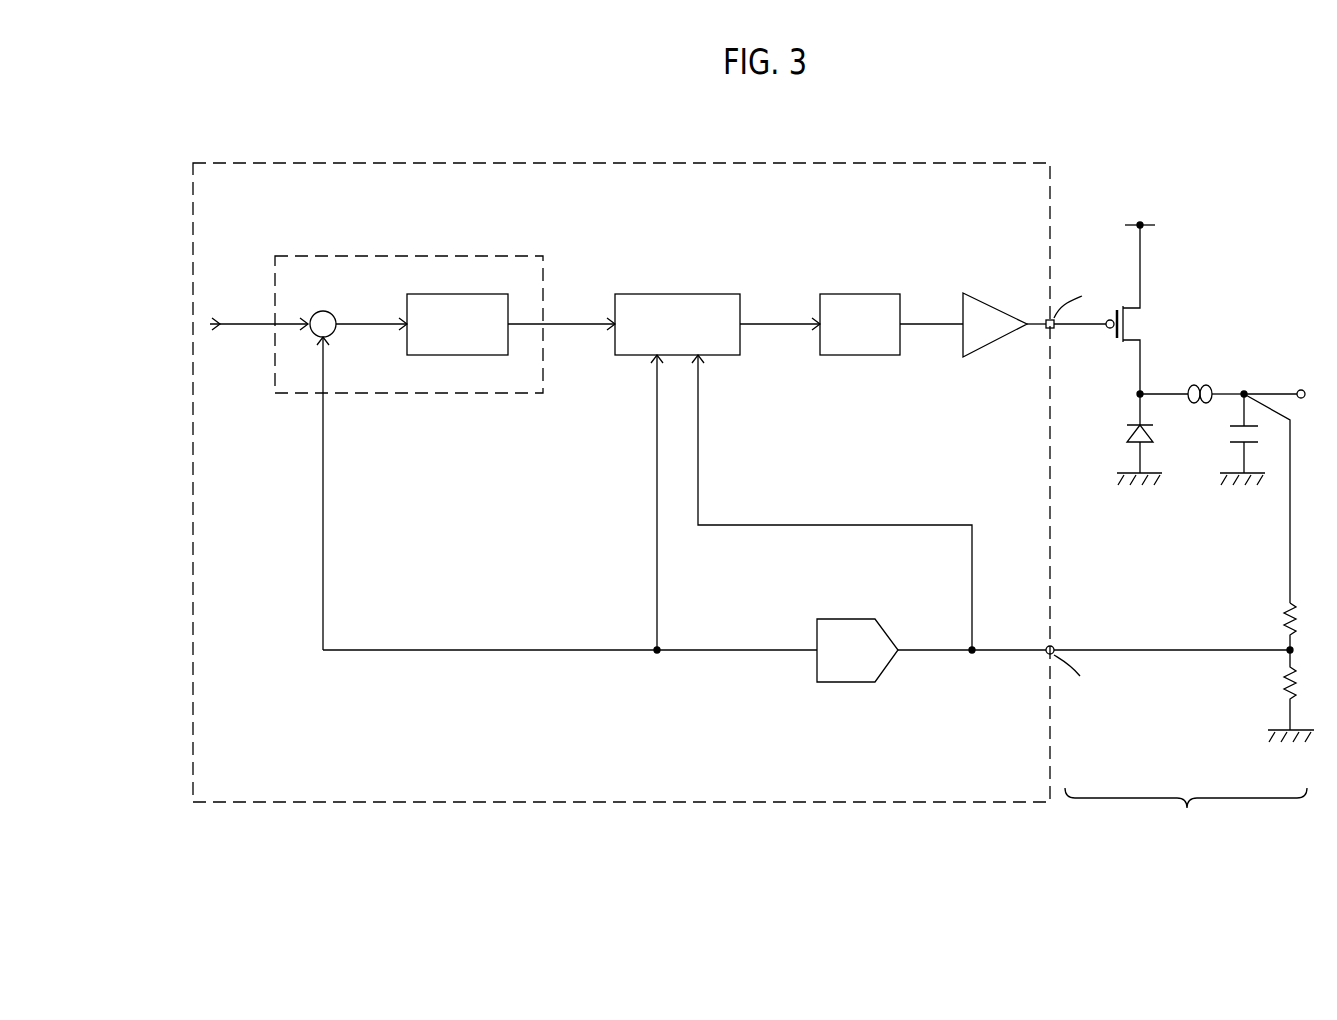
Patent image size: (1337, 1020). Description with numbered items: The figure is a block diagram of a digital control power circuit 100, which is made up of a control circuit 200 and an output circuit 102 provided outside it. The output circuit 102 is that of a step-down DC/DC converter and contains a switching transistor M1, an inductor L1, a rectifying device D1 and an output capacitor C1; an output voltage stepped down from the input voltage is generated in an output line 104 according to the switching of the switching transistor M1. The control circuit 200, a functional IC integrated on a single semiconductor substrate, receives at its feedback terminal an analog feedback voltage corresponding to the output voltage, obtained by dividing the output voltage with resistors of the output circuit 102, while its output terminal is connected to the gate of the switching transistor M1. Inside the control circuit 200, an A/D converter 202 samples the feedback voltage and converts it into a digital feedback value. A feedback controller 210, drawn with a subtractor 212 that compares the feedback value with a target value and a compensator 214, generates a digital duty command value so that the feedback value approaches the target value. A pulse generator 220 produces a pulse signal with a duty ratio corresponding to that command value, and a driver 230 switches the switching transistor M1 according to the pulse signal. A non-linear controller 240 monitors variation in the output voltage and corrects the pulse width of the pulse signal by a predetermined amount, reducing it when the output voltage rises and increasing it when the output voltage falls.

The digital control power circuit 100 is at (1287, 114).
The output circuit 102 is at (1186, 814).
The output line 104 is at (1262, 391).
The control circuit 200 is at (592, 802).
The A/D converter 202 is at (855, 619).
The feedback controller 210 is at (430, 256).
The subtractor 212 is at (327, 311).
The compensator 214 is at (466, 294).
The pulse generator 220 is at (861, 294).
The driver 230 is at (984, 302).
The non-linear controller 240 is at (684, 294).
The switching transistor M1 is at (1145, 318).
The inductor L1 is at (1204, 388).
The rectifying device D1 is at (1154, 430).
The output capacitor C1 is at (1231, 435).